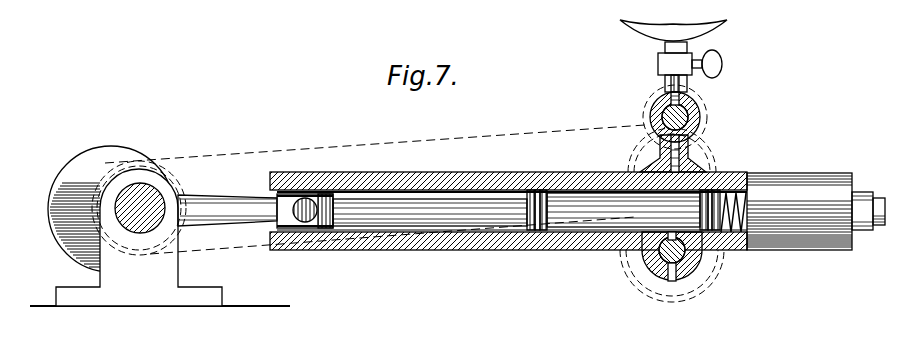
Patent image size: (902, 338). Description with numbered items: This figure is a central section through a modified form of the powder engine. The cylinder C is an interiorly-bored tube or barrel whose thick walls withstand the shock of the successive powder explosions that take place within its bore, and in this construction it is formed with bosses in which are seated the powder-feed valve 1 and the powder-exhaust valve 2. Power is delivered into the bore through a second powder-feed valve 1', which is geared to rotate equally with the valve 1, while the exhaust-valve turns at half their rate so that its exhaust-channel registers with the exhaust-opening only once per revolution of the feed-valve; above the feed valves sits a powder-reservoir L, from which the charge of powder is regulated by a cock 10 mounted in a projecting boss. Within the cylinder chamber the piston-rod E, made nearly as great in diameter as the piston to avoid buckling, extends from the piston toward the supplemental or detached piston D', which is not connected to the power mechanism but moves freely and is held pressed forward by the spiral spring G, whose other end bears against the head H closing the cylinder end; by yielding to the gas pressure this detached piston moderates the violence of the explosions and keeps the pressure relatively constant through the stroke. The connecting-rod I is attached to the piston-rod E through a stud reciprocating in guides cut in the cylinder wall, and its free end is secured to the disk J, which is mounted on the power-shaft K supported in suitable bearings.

The disk J is at (111, 209).
The power-shaft K is at (139, 233).
The connecting-rod I is at (232, 221).
The cylinder C is at (480, 160).
The piston-rod E is at (423, 215).
The supplemental or detached piston D' is at (535, 231).
The spiral spring G is at (749, 252).
The head H is at (858, 235).
The powder-exhaust valve 2 is at (656, 262).
The powder-feed valve 1 is at (683, 153).
The powder-feed valve 1' is at (693, 112).
The cup L is at (637, 26).
The cock 10 is at (720, 66).